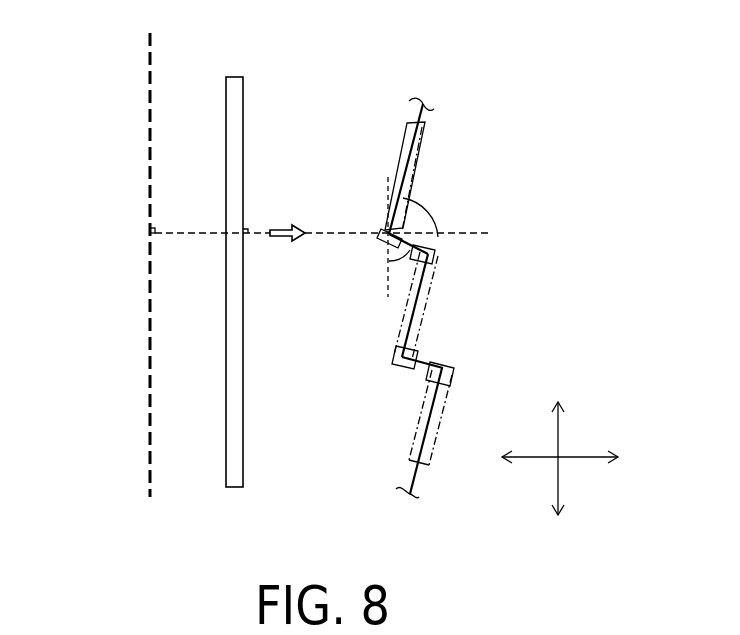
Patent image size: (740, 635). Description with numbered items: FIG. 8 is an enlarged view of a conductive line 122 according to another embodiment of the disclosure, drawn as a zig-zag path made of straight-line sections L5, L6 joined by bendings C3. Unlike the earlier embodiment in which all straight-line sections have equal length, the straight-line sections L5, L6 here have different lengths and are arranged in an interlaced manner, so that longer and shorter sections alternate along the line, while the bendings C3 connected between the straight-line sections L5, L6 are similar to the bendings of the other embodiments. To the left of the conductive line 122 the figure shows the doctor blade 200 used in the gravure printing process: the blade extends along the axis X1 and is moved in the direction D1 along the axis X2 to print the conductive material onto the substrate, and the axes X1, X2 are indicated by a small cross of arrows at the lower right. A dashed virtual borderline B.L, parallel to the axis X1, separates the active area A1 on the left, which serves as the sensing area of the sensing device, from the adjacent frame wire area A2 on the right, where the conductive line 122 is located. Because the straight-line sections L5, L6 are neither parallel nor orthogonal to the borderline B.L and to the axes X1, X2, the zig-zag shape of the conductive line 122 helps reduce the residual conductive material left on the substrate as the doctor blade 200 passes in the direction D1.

The conductive line 122 is at (530, 110).
The doctor blade 200 is at (235, 487).
The straight-line section L5 is at (422, 152).
The straight-line section L6 is at (403, 223).
The bending C3 is at (380, 233).
The direction D1 is at (282, 228).
The active area A1 is at (55, 58).
The frame wire area A2 is at (353, 58).
The borderline B.L is at (151, 248).
The axis X1 is at (559, 438).
The axis X2 is at (574, 458).